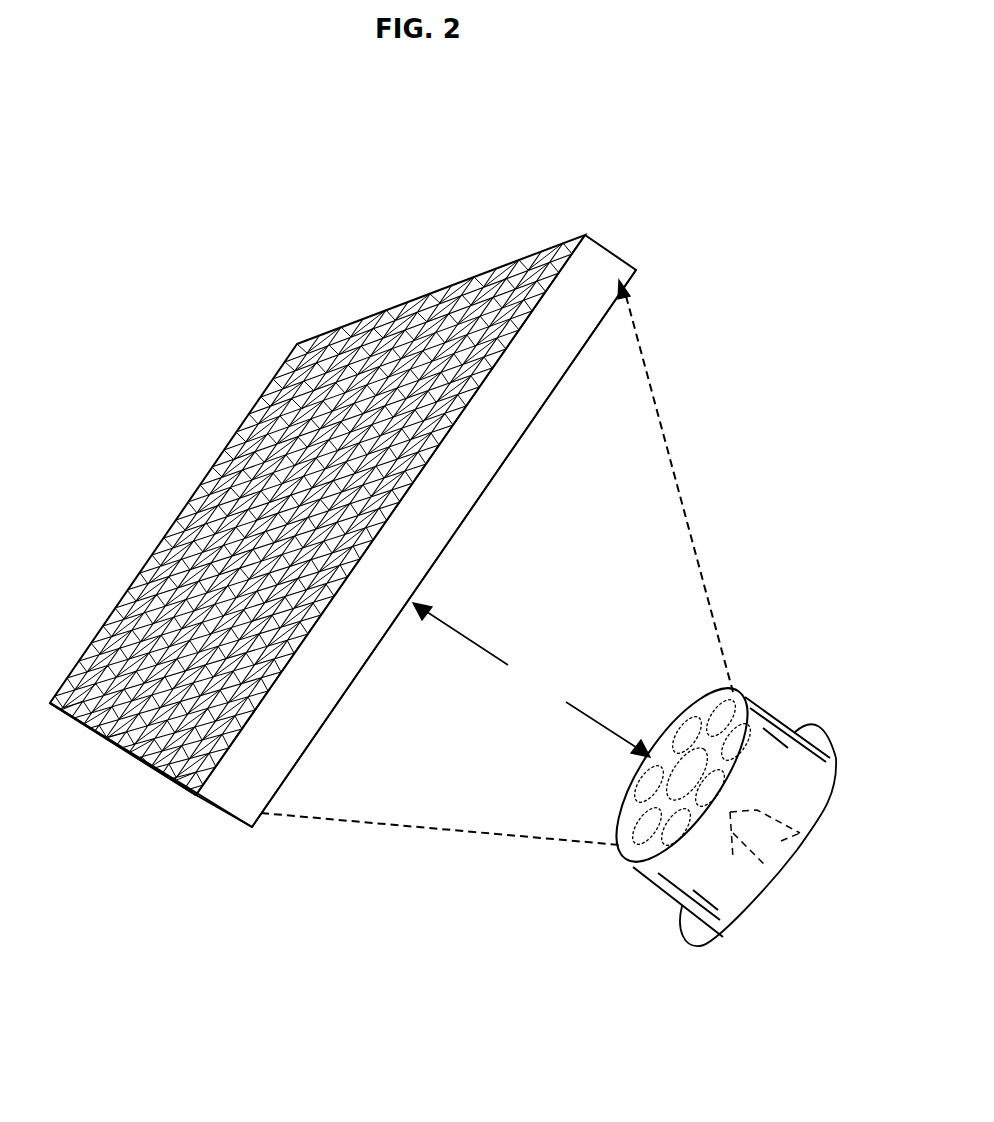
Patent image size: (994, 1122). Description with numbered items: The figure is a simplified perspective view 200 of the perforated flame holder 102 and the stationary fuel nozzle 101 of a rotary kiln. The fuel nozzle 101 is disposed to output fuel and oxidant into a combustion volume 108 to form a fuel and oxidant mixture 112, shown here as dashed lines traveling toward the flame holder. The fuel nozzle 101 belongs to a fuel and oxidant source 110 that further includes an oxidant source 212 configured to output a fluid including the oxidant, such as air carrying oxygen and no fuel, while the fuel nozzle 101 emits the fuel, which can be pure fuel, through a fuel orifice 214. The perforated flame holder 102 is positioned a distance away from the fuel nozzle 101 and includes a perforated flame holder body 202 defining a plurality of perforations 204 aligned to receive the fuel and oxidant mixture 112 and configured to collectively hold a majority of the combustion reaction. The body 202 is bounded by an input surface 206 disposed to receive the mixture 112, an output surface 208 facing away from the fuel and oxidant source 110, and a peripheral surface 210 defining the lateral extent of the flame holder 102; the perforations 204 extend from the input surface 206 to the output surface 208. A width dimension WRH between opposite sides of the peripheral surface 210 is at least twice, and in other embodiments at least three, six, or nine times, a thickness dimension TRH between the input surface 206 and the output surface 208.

The simplified perspective view 200 is at (252, 144).
The perforated flame holder 102 is at (596, 236).
The perforations 204 is at (320, 338).
The output surface 208 is at (454, 290).
The perforated flame holder body 202 is at (96, 740).
The input surface 206 is at (328, 722).
The width dimension WRH is at (280, 331).
The thickness dimension TRH is at (160, 799).
The peripheral surface 210 is at (626, 253).
The fuel and oxidant mixture 112 is at (666, 405).
The combustion volume 108 is at (531, 665).
The fuel and oxidant source 110 is at (806, 842).
The fuel nozzle 101 is at (640, 876).
The fuel orifice 214 is at (627, 808).
The oxidant source 212 is at (687, 944).